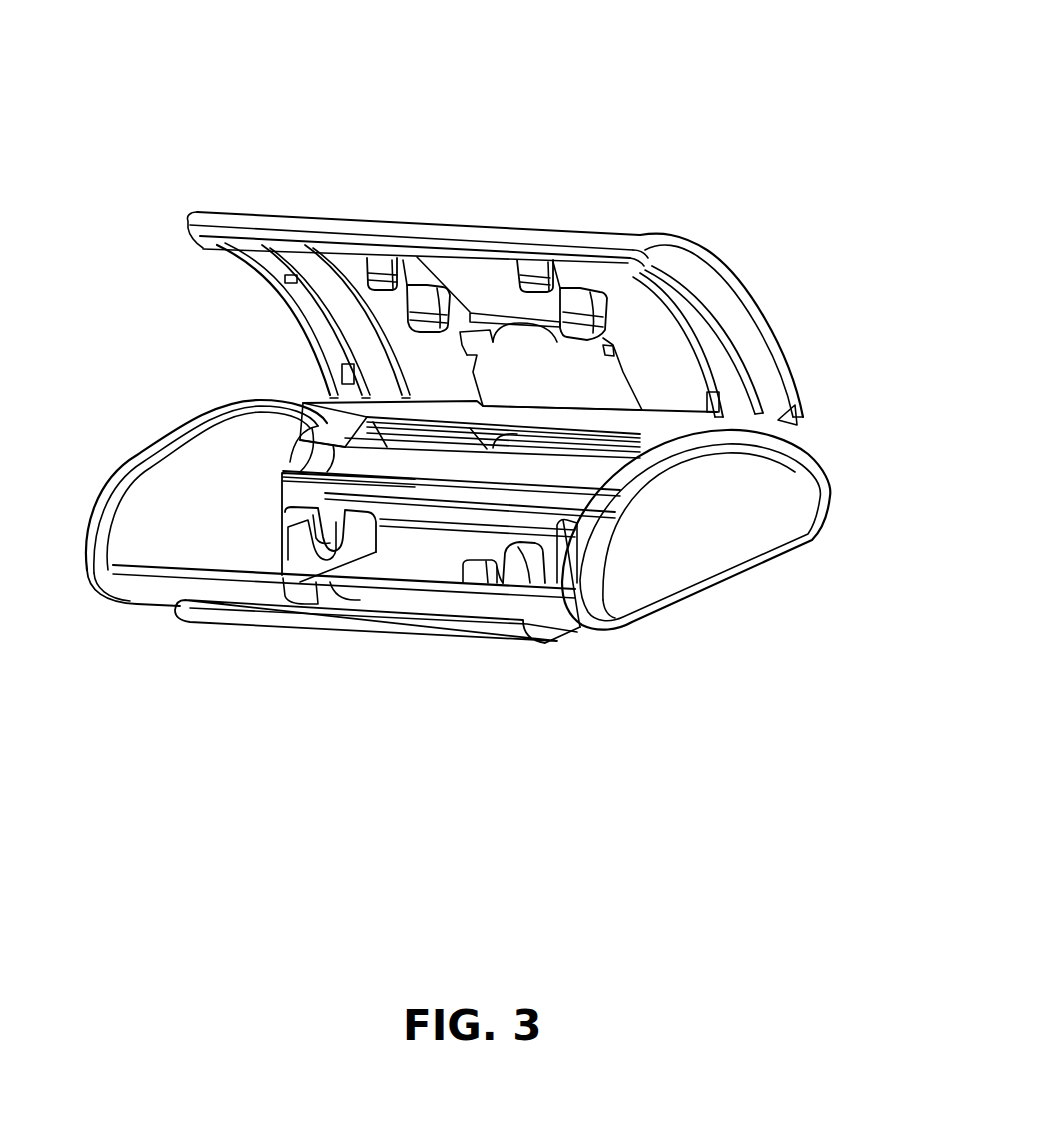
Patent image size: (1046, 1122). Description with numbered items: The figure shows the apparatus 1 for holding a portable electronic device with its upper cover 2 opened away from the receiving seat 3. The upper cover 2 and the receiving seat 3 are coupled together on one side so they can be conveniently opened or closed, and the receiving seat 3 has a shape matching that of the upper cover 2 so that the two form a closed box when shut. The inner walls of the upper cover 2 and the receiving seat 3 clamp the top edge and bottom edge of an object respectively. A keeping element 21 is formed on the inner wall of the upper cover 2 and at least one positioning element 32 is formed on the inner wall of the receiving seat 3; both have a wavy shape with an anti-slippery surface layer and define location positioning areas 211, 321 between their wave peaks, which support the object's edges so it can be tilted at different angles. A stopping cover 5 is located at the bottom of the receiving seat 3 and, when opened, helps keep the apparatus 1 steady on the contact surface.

The apparatus for holding portable electronic device 1 is at (688, 182).
The upper cover 2 is at (352, 325).
The keeping element 21 is at (418, 258).
The location positioning area 211 is at (448, 285).
The receiving seat 3 is at (160, 590).
The positioning element 32 is at (323, 560).
The location positioning area 321 is at (343, 533).
The stopping cover 5 is at (252, 617).